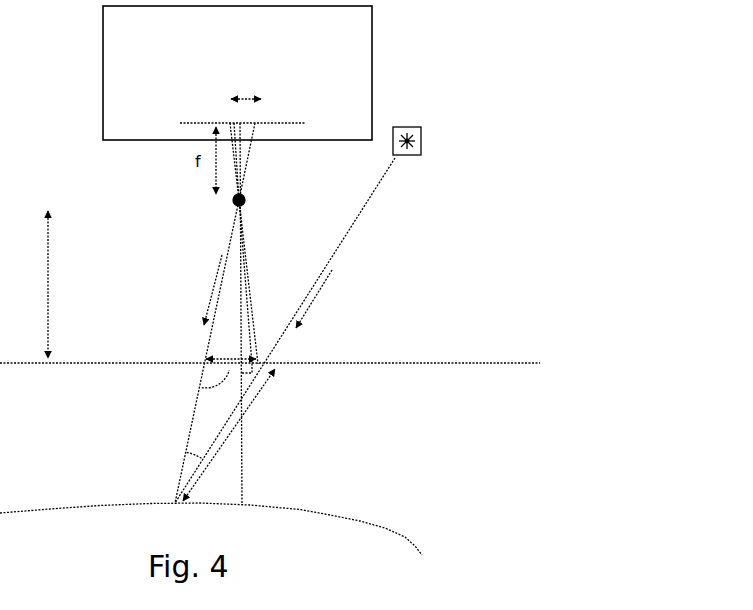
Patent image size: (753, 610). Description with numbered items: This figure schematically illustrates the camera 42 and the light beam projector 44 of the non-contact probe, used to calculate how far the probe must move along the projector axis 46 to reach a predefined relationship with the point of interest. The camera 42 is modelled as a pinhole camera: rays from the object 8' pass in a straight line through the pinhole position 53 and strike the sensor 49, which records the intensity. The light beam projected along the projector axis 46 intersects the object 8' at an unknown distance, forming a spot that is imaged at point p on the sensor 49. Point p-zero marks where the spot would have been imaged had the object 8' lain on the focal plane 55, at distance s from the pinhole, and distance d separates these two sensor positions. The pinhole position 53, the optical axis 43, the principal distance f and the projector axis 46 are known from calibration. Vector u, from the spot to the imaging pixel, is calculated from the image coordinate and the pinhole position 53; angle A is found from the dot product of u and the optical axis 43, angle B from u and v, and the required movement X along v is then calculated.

The camera 42 is at (372, 48).
The sensor 49 is at (195, 120).
The pinhole position 53 is at (233, 200).
The optical axis 43 is at (238, 292).
The light beam projector 44 is at (422, 140).
The projector axis 46 is at (370, 213).
The focal plane 55 is at (288, 301).
The object 8' is at (239, 504).